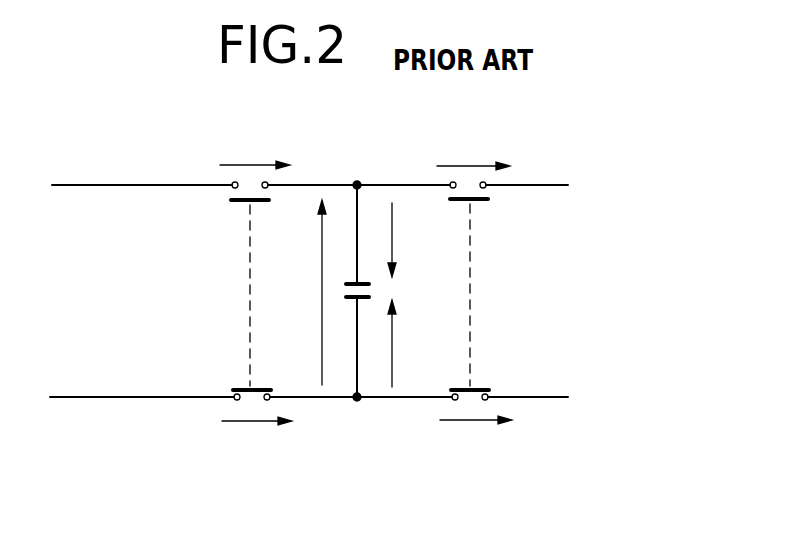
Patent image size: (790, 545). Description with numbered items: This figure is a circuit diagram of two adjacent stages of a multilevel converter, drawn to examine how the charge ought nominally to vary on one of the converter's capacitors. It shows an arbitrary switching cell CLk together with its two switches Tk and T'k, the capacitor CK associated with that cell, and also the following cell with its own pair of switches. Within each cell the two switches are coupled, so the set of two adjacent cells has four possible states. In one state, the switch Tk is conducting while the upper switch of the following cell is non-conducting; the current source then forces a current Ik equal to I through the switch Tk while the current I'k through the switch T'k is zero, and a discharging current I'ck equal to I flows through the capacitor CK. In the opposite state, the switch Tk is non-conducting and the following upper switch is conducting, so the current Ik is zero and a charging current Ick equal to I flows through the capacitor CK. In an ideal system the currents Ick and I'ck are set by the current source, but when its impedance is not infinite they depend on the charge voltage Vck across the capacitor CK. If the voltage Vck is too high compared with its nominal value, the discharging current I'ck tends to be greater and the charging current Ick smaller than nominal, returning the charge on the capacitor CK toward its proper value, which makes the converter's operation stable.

The switching cell CLk is at (462, 245).
The switch Tk is at (483, 204).
The switch T'k is at (490, 373).
The capacitor CK is at (370, 291).
The charge voltage Vck is at (304, 292).
The charging current Ick is at (412, 240).
The discharging current I'ck is at (416, 343).
The current Ik is at (473, 153).
The current I'k is at (476, 436).